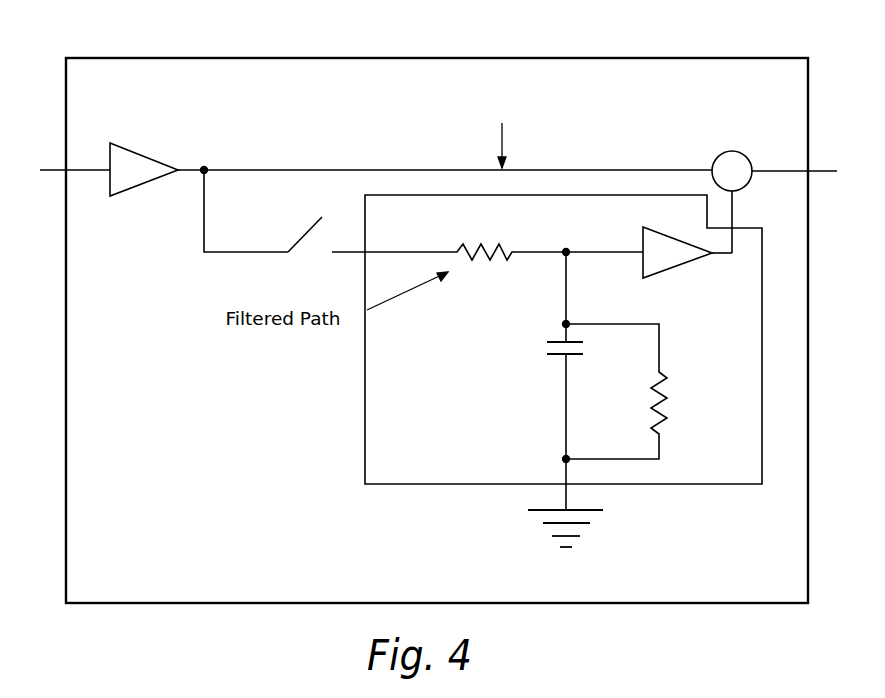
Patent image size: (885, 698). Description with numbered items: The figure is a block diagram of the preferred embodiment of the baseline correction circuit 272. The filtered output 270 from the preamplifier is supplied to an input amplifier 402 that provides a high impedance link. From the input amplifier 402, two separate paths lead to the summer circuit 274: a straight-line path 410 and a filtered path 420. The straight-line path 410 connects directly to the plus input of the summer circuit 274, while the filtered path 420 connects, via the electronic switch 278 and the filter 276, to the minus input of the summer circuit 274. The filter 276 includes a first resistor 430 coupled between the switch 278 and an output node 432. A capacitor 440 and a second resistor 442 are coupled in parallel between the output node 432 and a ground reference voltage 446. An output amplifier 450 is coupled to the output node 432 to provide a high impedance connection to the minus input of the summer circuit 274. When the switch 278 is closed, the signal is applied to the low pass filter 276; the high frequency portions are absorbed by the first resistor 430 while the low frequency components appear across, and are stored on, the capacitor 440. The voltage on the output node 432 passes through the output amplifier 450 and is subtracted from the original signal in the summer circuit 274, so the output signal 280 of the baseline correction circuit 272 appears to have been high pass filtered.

The filtered output 270 is at (53, 168).
The baseline correction circuit 272 is at (508, 58).
The summer circuit 274 is at (733, 152).
The filter 276 is at (363, 413).
The electronic switch 278 is at (310, 232).
The output signal 280 is at (818, 170).
The input amplifier 402 is at (132, 149).
The straight-line path 410 is at (270, 168).
The filtered path 420 is at (192, 247).
The resistor 430 is at (507, 242).
The output node 432 is at (570, 247).
The capacitor 440 is at (560, 357).
The resistor 442 is at (660, 382).
The ground reference voltage 446 is at (545, 525).
The output amplifier 450 is at (667, 270).